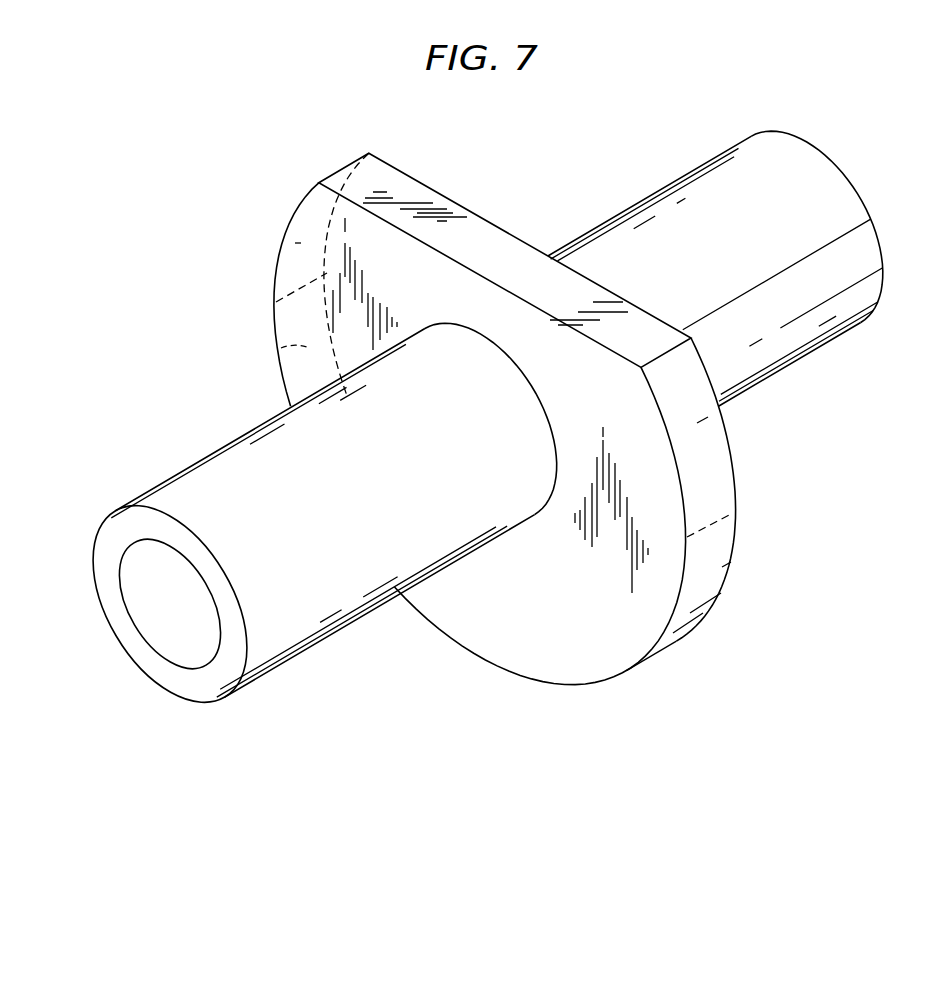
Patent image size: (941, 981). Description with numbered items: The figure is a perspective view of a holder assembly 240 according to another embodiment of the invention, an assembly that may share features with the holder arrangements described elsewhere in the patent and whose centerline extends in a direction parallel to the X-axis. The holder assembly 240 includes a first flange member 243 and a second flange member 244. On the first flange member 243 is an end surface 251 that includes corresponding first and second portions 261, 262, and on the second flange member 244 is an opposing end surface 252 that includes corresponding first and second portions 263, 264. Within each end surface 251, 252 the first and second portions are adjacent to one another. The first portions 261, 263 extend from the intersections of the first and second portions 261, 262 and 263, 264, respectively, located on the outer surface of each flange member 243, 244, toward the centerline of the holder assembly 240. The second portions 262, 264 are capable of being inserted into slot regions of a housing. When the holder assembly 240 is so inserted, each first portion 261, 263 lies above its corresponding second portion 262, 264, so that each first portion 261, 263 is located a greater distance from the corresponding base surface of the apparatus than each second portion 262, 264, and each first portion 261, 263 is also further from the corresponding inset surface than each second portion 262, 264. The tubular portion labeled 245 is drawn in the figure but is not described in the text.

The holder assembly 240 is at (445, 730).
The first flange member 243 is at (632, 450).
The second flange member 244 is at (363, 258).
The first tubular portion 245 is at (341, 580).
The end surface 251 is at (735, 497).
The opposing end surface 252 is at (262, 328).
The first portion 261 is at (703, 472).
The second portion 262 is at (707, 575).
The first portion 263 is at (295, 243).
The second portion 264 is at (281, 348).